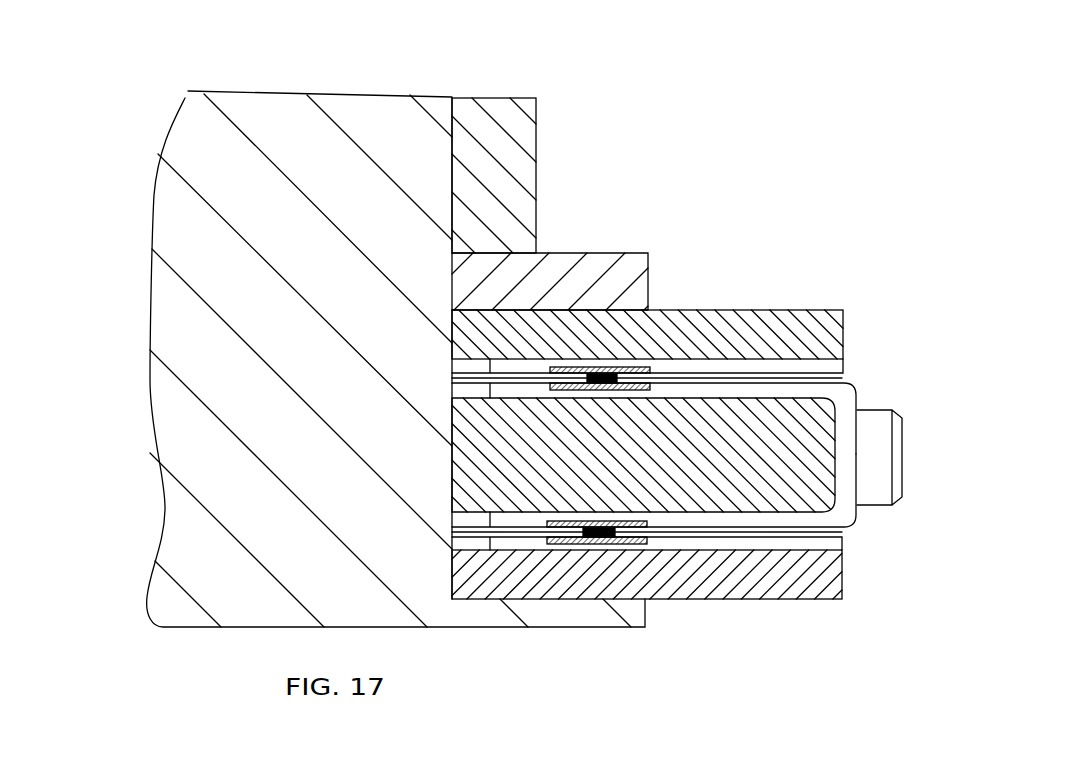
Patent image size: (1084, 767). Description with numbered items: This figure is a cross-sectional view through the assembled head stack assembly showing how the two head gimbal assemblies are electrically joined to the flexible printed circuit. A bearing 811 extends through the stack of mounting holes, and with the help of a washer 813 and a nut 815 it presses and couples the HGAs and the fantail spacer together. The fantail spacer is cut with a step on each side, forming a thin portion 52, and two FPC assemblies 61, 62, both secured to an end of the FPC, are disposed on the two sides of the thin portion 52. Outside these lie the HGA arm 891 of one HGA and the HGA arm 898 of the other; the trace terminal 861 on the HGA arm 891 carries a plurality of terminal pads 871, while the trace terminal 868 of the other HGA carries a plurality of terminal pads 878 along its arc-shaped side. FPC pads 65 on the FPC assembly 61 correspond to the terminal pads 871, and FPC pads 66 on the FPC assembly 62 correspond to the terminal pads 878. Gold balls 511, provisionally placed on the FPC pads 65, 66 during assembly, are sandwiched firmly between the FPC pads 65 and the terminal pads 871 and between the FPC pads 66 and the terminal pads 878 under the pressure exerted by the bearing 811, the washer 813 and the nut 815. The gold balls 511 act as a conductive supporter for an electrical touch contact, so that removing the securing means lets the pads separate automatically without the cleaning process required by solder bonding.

The bearing 811 is at (322, 155).
The nut 815 is at (500, 182).
The washer 813 is at (590, 270).
The HGA arm 891 is at (722, 332).
The HGA arm 898 is at (813, 582).
The trace terminal 861 is at (830, 370).
The trace terminal 868 is at (822, 547).
The terminal pads 871 is at (637, 367).
The terminal pads 878 is at (643, 530).
The gold balls 511 is at (605, 370).
The FPC pads 65 is at (653, 382).
The FPC pads 66 is at (655, 522).
The FPC assembly 61 is at (783, 390).
The FPC assembly 62 is at (772, 520).
The thin portion 52 is at (528, 472).